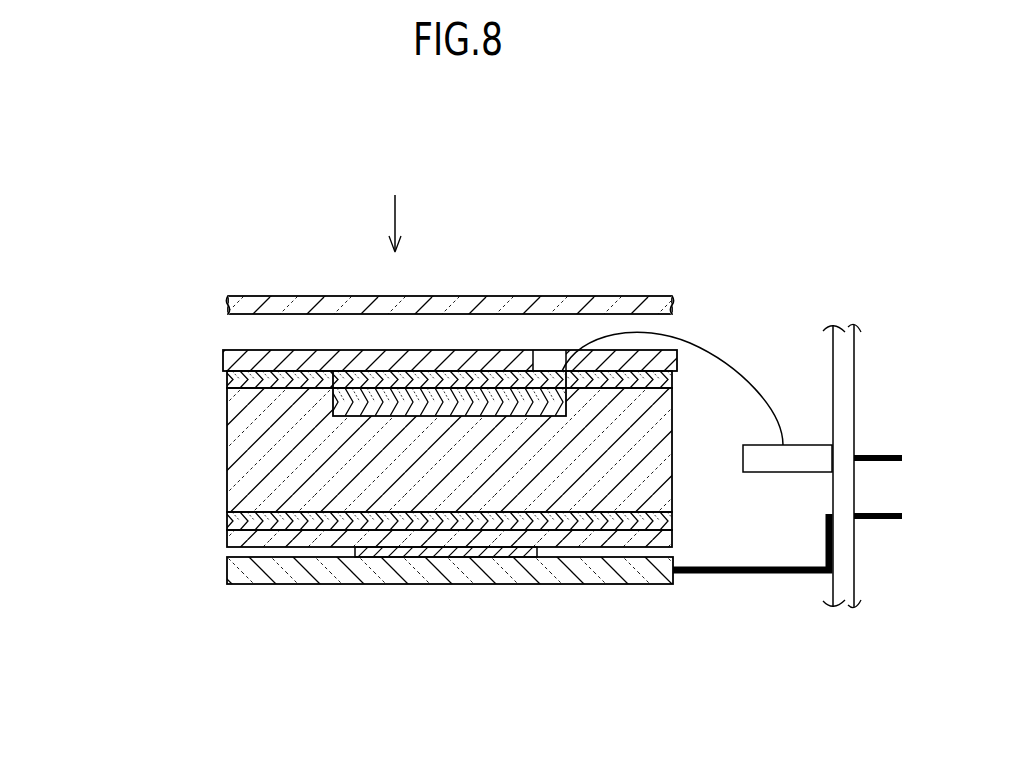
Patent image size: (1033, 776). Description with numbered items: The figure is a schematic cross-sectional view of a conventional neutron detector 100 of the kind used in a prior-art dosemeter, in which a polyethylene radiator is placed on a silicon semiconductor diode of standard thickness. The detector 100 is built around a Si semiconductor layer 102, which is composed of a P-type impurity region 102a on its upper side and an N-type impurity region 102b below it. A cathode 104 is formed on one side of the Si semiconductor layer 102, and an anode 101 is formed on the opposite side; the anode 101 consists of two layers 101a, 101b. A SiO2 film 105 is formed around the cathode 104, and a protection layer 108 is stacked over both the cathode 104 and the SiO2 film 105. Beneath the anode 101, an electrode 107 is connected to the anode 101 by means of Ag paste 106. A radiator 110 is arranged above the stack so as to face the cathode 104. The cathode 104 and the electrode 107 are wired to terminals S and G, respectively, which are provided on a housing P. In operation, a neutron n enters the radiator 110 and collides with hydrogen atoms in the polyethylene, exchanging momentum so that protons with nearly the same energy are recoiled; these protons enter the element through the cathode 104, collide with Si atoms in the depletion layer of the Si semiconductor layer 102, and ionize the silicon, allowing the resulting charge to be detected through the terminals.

The detector 100 is at (460, 254).
The radiator 110 is at (625, 297).
The protection layer 108 is at (223, 362).
The SiO2 film 105 is at (230, 379).
The cathode 104 is at (353, 377).
The Si semiconductor layer 102 is at (105, 425).
The P-type impurity region 102a is at (333, 393).
The N-type impurity region 102b is at (253, 472).
The anode 101 is at (253, 696).
The anode layer 101a is at (227, 540).
The anode layer 101b is at (227, 520).
The Ag paste 106 is at (442, 552).
The electrode 107 is at (590, 574).
The neutron n is at (393, 208).
The housing P is at (857, 348).
The terminal S is at (878, 455).
The terminal G is at (888, 513).